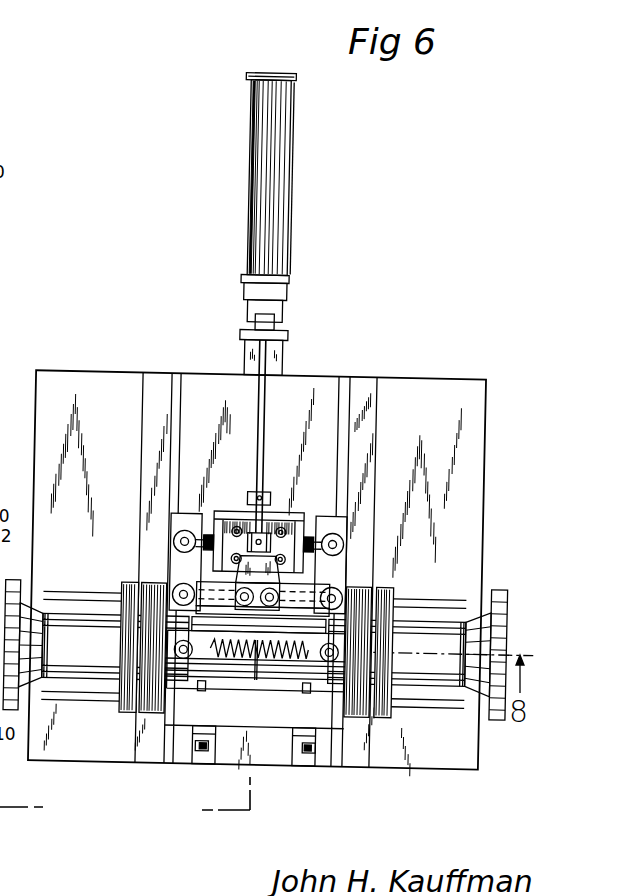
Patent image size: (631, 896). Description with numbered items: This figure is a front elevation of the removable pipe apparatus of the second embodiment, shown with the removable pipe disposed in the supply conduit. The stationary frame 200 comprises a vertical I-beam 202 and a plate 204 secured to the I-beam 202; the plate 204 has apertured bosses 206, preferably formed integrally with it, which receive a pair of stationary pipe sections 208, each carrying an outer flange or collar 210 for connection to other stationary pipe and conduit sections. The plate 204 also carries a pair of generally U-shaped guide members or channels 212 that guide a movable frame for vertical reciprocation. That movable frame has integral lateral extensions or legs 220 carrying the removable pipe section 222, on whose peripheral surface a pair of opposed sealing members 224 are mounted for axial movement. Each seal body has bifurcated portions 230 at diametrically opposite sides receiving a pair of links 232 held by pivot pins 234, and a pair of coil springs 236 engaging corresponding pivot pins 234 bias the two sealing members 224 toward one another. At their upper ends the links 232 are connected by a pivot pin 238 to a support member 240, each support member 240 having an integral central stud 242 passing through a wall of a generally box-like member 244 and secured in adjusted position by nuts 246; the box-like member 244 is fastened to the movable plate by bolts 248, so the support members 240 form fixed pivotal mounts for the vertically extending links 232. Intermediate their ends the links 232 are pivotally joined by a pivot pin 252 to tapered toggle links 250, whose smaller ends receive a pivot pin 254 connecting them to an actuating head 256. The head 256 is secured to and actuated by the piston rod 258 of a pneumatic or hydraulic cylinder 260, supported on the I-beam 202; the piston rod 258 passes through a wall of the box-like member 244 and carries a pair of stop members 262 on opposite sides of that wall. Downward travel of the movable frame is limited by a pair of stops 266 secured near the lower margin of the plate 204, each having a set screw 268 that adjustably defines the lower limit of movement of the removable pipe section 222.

The stationary frame 200 is at (463, 370).
The vertical I-beam 202 is at (243, 351).
The plate 204 is at (79, 374).
The bosses 206 is at (128, 714).
The stationary pipe sections 208 is at (100, 670).
The outer flange or collar 210 is at (498, 586).
The guide members or channels 212 is at (158, 395).
The lateral extensions or legs 220 is at (207, 690).
The removable pipe section 222 is at (222, 672).
The sealing members 224 is at (151, 720).
The bifurcated portions 230 is at (196, 688).
The links 232 is at (180, 546).
The pivot pins 234 is at (185, 660).
The coil springs 236 is at (262, 665).
The pivot pin 238 is at (173, 543).
The support members 240 is at (186, 525).
The central stud 242 is at (307, 538).
The box-like member 244 is at (285, 515).
The nuts 246 is at (271, 540).
The bolts 248 is at (281, 530).
The toggle links 250 is at (198, 586).
The pivot pin 252 is at (180, 593).
The pivot pin 254 is at (253, 602).
The actuating head 256 is at (240, 577).
The piston rod 258 is at (256, 381).
The motor unit or cylinder 260 is at (272, 182).
The stop members 262 is at (247, 495).
The stops 266 is at (212, 762).
The set screw 268 is at (200, 751).